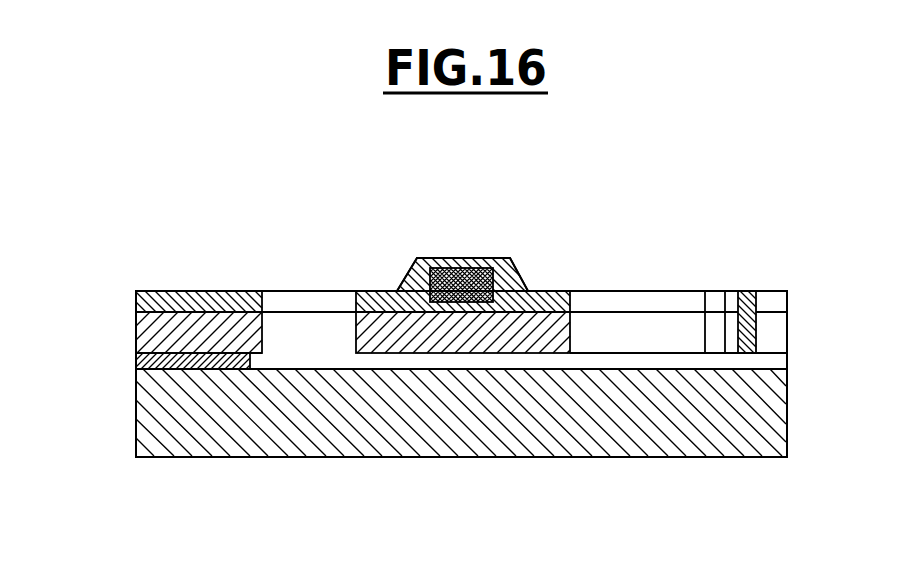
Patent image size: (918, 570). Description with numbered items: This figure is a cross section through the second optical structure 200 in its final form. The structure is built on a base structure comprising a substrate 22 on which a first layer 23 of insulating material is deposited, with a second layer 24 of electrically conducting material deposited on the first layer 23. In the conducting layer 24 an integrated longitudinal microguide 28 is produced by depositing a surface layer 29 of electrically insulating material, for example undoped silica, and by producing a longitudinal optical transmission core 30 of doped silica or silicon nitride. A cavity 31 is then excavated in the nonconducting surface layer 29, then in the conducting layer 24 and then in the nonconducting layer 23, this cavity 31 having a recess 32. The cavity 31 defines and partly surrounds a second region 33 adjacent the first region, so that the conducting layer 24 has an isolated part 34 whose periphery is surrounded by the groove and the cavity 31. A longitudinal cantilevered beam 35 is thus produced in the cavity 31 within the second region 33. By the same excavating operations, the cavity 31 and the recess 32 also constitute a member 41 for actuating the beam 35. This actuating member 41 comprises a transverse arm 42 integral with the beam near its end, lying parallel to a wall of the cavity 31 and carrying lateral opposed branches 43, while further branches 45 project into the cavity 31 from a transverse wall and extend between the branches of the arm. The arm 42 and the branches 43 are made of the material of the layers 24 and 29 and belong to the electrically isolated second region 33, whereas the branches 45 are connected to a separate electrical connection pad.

The second optical structure 200 is at (204, 262).
The substrate 22 is at (160, 408).
The first layer 23 is at (160, 358).
The second layer 24 is at (160, 328).
The surface layer 29 is at (160, 300).
The integrated longitudinal microguide 28 is at (480, 248).
The longitudinal optical transmission core 30 is at (460, 262).
The cavity 31 is at (609, 308).
The recess 32 is at (517, 360).
The second region 33 is at (663, 291).
The isolated part 34 is at (549, 286).
The longitudinal cantilevered beam 35 is at (430, 330).
The actuating member 41 is at (767, 268).
The transverse arm 42 is at (648, 333).
The branches 43 is at (708, 337).
The branches 45 is at (757, 330).